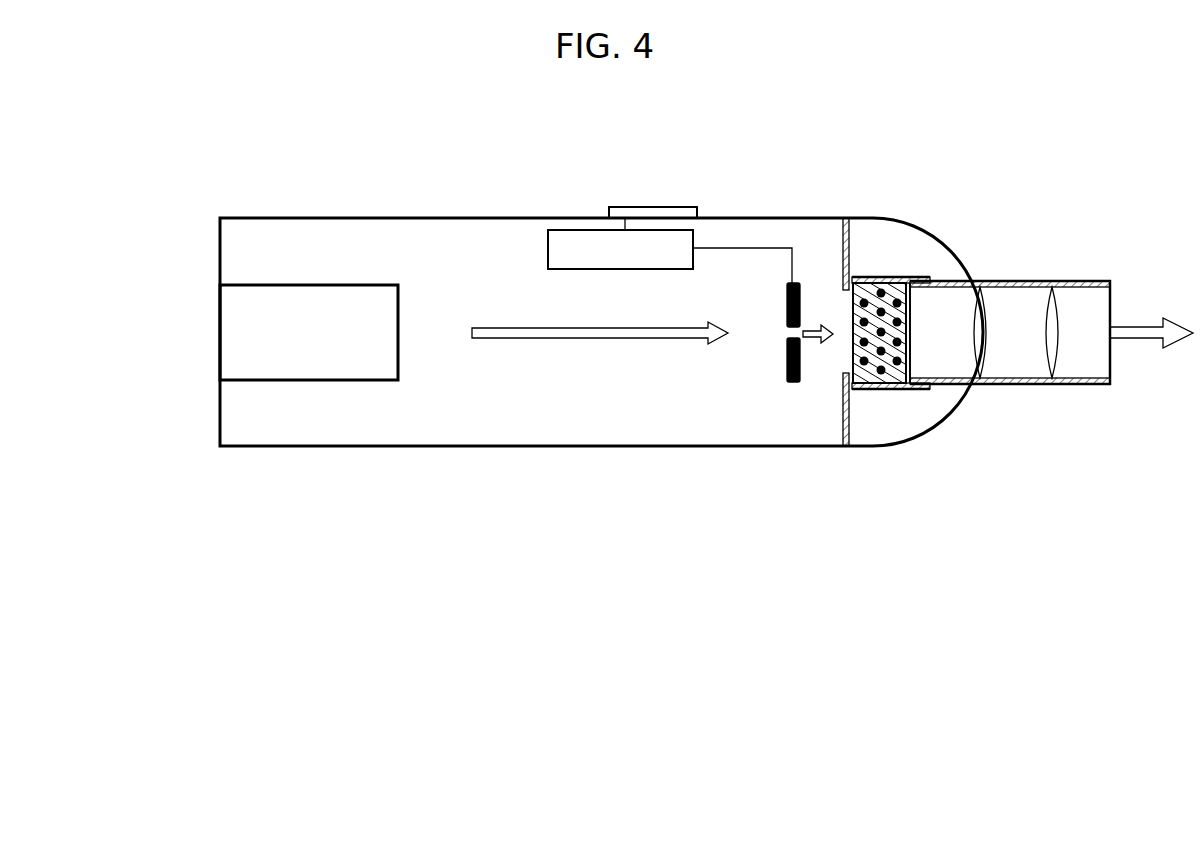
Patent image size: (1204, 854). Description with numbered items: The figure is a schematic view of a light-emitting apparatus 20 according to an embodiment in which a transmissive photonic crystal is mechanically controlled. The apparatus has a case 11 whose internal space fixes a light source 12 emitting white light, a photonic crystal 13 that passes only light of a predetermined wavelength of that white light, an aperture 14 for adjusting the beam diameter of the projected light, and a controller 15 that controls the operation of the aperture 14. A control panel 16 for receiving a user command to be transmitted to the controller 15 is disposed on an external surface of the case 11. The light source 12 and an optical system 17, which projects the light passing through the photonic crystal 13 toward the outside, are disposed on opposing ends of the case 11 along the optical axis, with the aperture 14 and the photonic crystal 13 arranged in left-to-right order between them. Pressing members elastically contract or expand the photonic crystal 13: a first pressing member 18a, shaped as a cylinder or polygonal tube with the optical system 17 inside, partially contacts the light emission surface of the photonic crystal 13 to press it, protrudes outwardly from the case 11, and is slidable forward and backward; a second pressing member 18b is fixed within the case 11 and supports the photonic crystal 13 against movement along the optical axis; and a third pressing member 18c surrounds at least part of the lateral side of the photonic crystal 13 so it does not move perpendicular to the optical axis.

The case 11 is at (271, 448).
The light source 12 is at (233, 340).
The photonic crystal 13 is at (879, 390).
The aperture 14 is at (793, 384).
The controller 15 is at (575, 229).
The control panel 16 is at (678, 206).
The optical system 17 is at (1045, 310).
The first pressing member 18a is at (1002, 389).
The second pressing member 18b is at (843, 428).
The third pressing member 18c is at (913, 389).
The light-emitting apparatus 20 is at (518, 460).